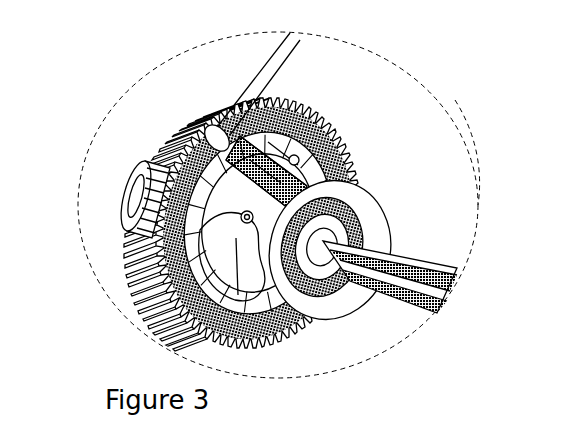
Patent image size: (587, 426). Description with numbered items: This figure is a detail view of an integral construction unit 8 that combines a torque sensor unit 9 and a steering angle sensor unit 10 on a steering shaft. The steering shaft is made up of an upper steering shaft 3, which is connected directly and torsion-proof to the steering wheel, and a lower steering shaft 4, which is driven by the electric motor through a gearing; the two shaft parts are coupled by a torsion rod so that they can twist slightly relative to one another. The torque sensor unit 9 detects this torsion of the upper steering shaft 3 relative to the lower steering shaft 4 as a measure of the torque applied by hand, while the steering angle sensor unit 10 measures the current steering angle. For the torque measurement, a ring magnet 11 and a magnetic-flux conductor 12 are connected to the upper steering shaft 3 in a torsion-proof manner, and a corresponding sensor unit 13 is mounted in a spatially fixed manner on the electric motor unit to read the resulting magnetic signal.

The upper steering shaft 3 is at (416, 277).
The lower steering shaft 4 is at (134, 166).
The integral construction unit 8 is at (350, 135).
The torque sensor unit 9 is at (296, 197).
The steering angle sensor unit 10 is at (322, 181).
The ring magnet 11 is at (477, 213).
The magnetic-flux conductor 12 is at (450, 143).
The sensor unit 13 is at (278, 330).